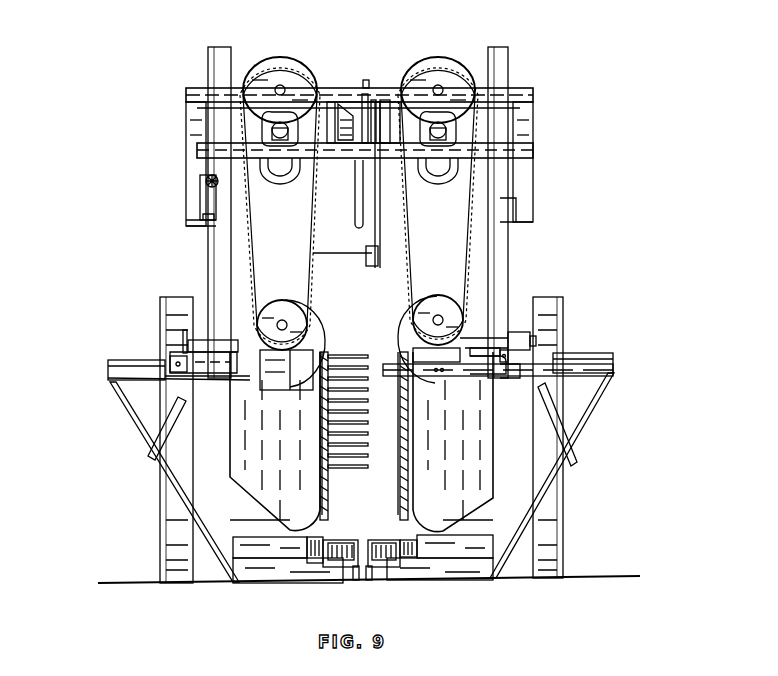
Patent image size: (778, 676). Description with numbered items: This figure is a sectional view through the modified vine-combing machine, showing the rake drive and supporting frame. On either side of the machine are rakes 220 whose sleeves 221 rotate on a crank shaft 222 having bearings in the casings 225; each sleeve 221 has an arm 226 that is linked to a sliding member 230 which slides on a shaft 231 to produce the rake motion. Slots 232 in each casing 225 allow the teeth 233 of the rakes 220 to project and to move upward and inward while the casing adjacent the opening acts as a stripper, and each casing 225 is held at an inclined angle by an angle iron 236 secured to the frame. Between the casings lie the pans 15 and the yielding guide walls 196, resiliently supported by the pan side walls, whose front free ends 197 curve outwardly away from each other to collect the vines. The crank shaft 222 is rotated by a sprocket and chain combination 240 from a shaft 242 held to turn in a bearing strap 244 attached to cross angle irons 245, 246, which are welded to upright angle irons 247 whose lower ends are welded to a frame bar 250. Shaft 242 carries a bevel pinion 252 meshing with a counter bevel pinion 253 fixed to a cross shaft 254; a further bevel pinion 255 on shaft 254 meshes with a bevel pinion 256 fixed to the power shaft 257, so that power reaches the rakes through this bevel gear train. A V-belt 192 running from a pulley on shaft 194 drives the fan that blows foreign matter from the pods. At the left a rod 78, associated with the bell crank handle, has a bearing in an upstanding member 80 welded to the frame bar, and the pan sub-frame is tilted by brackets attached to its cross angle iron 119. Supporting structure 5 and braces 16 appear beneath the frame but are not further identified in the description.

The pedestal support 5 is at (165, 520).
The pans 15 is at (265, 578).
The diagonal brace 16 is at (138, 420).
The rod 78 is at (205, 182).
The upstanding member 80 is at (203, 202).
The cross angle iron 119 is at (110, 374).
The V-belt 192 is at (374, 238).
The shaft 194 is at (367, 256).
The guide walls 196 is at (352, 570).
The front free ends 197 is at (379, 568).
The rakes 220 is at (330, 520).
The sleeves 221 is at (316, 346).
The crank shaft 222 is at (284, 320).
The casings 225 is at (244, 472).
The arm 226 is at (496, 376).
The sliding member 230 is at (530, 338).
The shaft 231 is at (185, 347).
The slots 232 is at (332, 488).
The teeth 233 is at (364, 470).
The angle iron 236 is at (386, 364).
The sprocket and chain combination 240 is at (254, 248).
The shaft 242 is at (280, 85).
The bearing strap 244 is at (268, 165).
The cross angle iron 245 is at (513, 92).
The cross angle iron 246 is at (515, 162).
The angle iron 247 is at (188, 154).
The frame bar 250 is at (204, 216).
The bevel pinion 252 is at (265, 134).
The bevel pinion 253 is at (292, 106).
The cross shaft 254 is at (344, 112).
The bevel pinion 255 is at (365, 80).
The bevel pinion 256 is at (370, 94).
The power shaft 257 is at (356, 212).